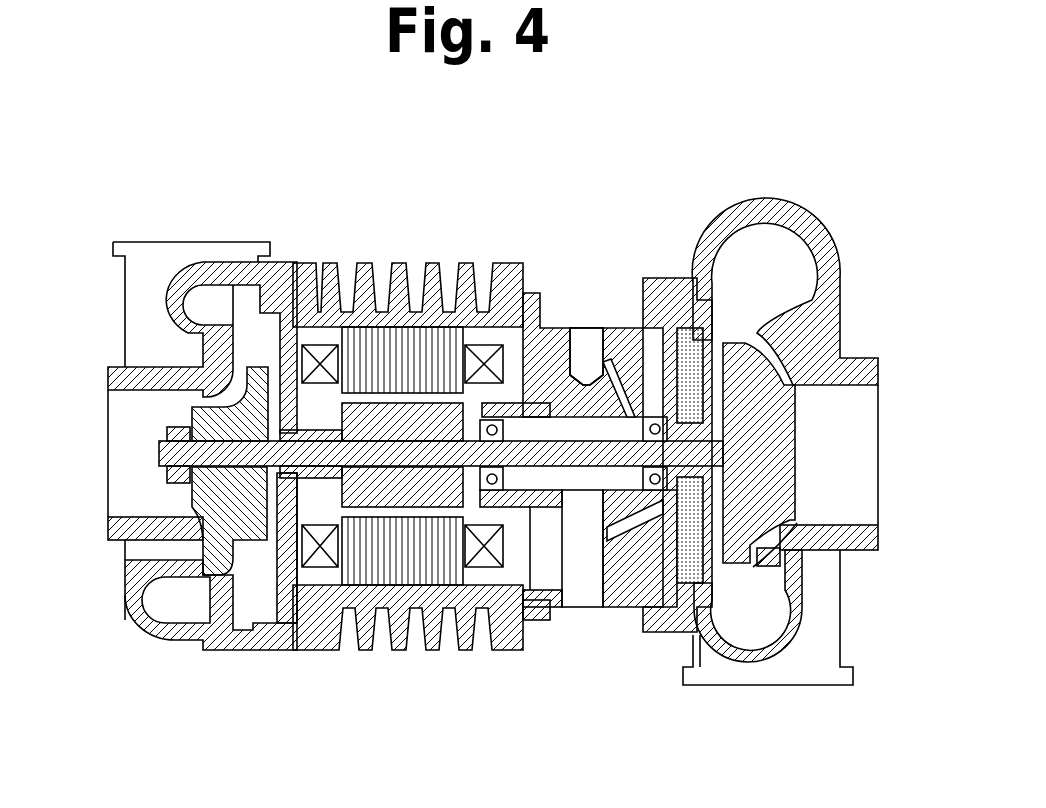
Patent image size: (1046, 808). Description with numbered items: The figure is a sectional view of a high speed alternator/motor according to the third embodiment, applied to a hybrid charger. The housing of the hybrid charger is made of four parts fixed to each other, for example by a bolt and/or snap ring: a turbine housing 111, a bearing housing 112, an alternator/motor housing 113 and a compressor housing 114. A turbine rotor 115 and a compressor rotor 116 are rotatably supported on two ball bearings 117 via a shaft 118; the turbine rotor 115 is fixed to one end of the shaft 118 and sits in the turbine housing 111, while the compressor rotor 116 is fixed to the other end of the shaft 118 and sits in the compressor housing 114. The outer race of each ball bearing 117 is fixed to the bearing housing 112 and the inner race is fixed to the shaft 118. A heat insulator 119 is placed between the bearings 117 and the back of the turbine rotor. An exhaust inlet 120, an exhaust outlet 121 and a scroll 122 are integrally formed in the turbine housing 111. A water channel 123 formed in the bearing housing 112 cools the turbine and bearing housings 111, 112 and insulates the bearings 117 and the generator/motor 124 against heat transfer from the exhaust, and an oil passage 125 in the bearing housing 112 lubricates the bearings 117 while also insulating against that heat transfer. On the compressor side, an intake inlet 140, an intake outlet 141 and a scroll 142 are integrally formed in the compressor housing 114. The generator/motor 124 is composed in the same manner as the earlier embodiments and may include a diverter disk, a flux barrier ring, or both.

The turbine housing 111 is at (833, 265).
The bearing housing 112 is at (510, 633).
The alternator/motor housing 113 is at (418, 300).
The compressor housing 114 is at (142, 630).
The turbine rotor 115 is at (773, 510).
The compressor rotor 116 is at (247, 505).
The ball bearings 117 is at (493, 485).
The shaft 118 is at (541, 440).
The heat insulator 119 is at (690, 580).
The exhaust inlet 120 is at (777, 686).
The exhaust outlet 121 is at (847, 413).
The scroll 122 is at (768, 245).
The water channel 123 is at (653, 352).
The generator/motor 124 is at (323, 578).
The oil passage 125 is at (590, 335).
The intake inlet 140 is at (118, 433).
The intake outlet 141 is at (183, 242).
The scroll 142 is at (200, 605).